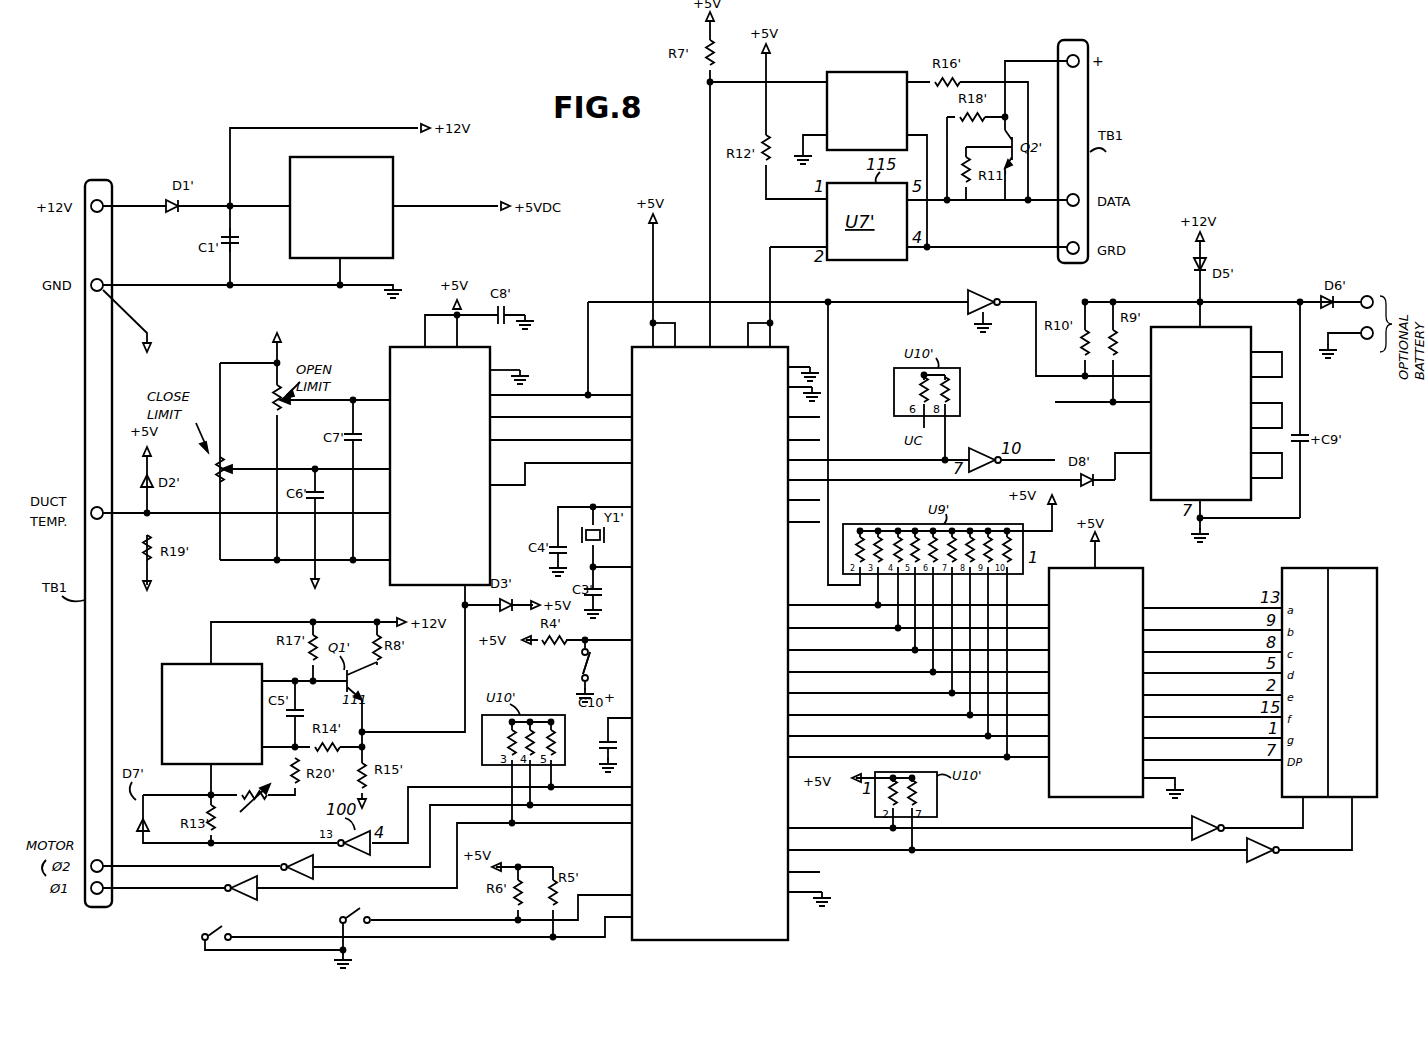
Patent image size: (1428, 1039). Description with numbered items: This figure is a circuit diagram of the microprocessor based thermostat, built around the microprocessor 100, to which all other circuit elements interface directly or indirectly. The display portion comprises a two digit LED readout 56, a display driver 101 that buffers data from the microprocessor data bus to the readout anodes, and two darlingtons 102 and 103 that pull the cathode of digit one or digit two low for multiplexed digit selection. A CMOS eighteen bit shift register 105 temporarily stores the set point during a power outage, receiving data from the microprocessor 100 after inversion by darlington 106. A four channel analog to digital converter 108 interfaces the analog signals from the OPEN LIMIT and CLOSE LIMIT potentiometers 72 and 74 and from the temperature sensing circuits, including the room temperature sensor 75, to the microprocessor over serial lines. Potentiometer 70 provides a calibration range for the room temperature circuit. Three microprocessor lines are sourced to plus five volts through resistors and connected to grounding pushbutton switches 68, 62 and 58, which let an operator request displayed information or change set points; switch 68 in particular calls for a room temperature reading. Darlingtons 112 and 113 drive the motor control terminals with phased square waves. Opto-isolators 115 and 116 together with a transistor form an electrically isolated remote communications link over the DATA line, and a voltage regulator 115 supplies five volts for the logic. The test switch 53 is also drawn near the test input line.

The test switch 53 is at (598, 671).
The LED readout 56 is at (1342, 568).
The grounding pushbutton switch 58 is at (210, 932).
The grounding pushbutton switch 62 is at (348, 916).
The grounding pushbutton switch 68 is at (580, 676).
The potentiometer 70 is at (240, 796).
The OPEN LIMIT potentiometer 72 is at (305, 446).
The CLOSE LIMIT potentiometer 74 is at (290, 477).
The room temperature sensor 75 is at (182, 664).
The microprocessor 100 is at (790, 918).
The display driver 101 is at (1127, 568).
The darlington 102 is at (1210, 816).
The darlington 103 is at (1262, 856).
The shift register 105 is at (1226, 327).
The darlington 106 is at (968, 298).
The analog to digital converter 108 is at (390, 347).
The darlington 112 is at (298, 856).
The darlington 113 is at (238, 880).
The opto-isolator 115 is at (393, 170).
The opto-isolator 116 is at (876, 72).